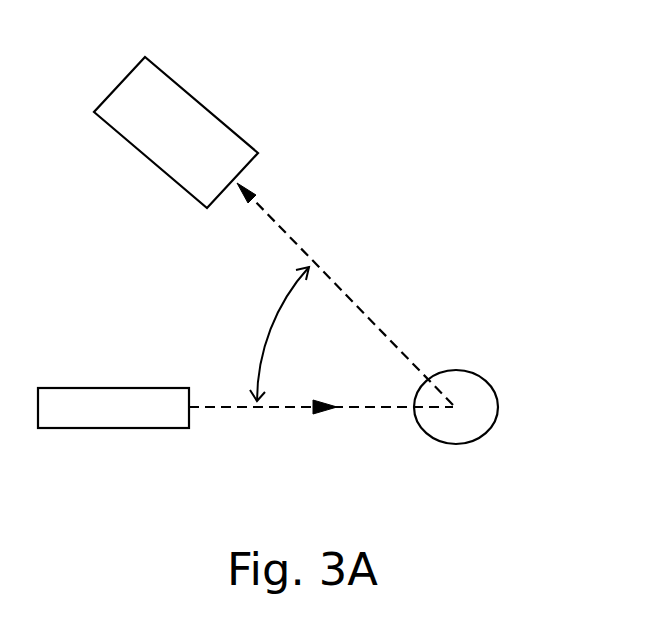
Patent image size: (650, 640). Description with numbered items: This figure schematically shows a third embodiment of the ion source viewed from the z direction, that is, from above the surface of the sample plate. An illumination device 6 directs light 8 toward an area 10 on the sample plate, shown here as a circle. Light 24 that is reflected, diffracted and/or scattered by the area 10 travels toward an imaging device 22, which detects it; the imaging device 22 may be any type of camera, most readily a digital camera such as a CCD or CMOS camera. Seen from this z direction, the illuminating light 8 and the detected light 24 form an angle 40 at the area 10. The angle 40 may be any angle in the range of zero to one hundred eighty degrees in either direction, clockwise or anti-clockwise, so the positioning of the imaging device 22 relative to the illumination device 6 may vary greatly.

The illumination device 6 is at (112, 398).
The light 8 is at (298, 408).
The area 10 is at (483, 377).
The imaging device 22 is at (173, 103).
The light 24 is at (353, 295).
The angle 40 is at (274, 306).